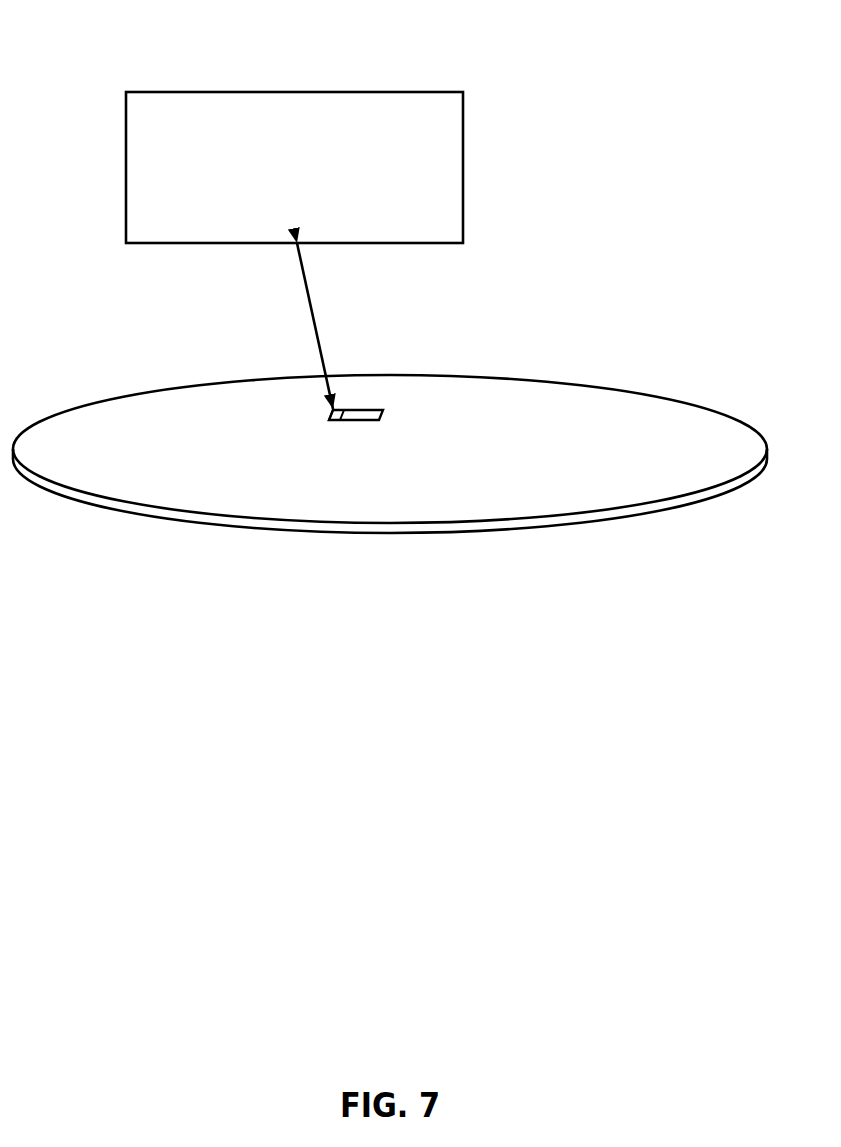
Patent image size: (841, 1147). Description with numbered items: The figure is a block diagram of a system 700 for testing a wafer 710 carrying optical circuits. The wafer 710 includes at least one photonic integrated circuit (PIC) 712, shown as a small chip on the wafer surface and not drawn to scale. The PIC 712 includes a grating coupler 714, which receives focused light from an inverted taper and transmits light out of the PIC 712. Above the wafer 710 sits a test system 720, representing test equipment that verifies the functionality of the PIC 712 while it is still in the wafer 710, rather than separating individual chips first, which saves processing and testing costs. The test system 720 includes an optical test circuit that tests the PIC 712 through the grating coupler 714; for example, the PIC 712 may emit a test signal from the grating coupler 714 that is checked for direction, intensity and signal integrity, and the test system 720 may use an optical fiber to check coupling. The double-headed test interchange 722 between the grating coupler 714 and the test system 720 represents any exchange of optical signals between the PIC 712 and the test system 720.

The system 700 is at (707, 26).
The wafer 710 is at (702, 460).
The photonic integrated circuit (PIC) 712 is at (364, 421).
The grating coupler 714 is at (331, 421).
The test system 720 is at (280, 190).
The test interchange 722 is at (590, 328).